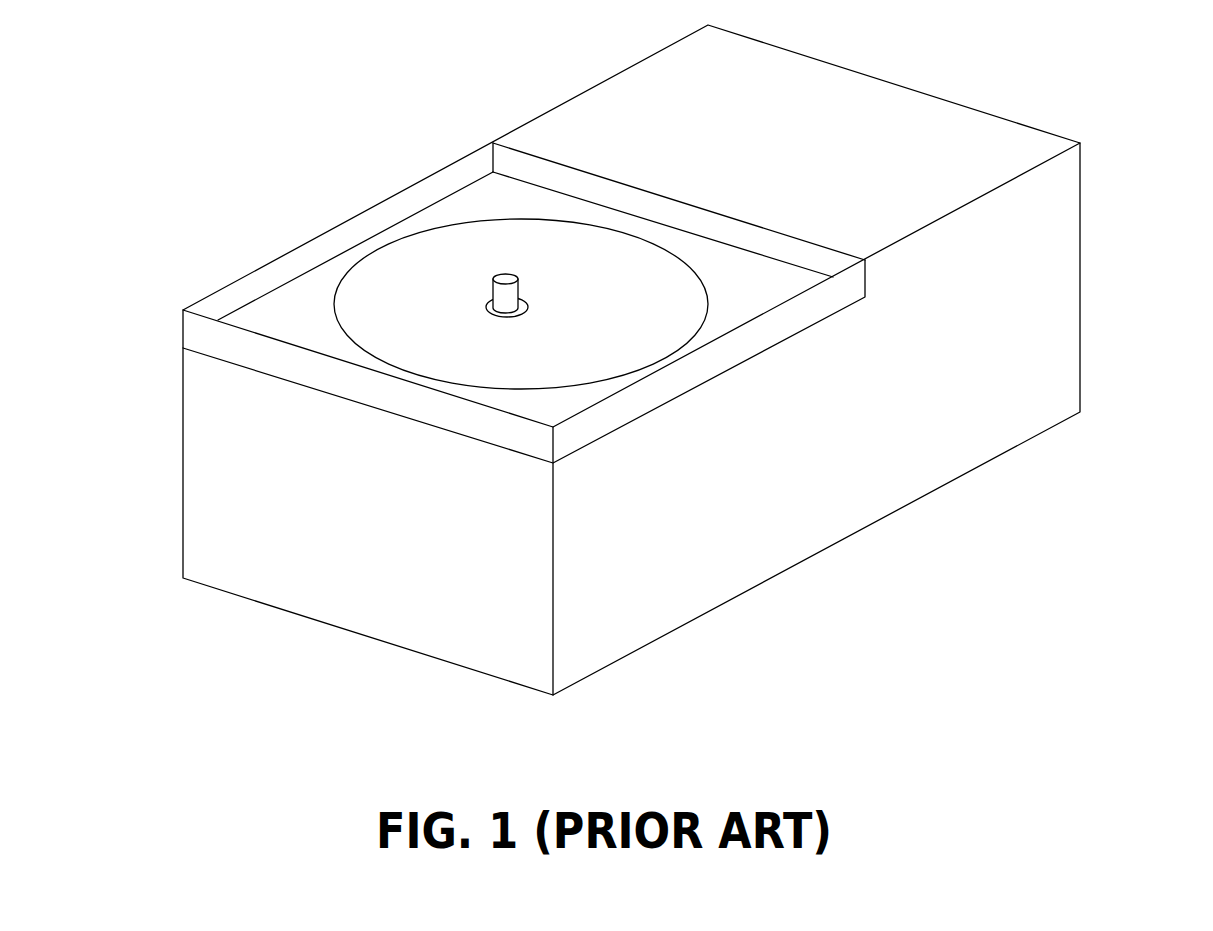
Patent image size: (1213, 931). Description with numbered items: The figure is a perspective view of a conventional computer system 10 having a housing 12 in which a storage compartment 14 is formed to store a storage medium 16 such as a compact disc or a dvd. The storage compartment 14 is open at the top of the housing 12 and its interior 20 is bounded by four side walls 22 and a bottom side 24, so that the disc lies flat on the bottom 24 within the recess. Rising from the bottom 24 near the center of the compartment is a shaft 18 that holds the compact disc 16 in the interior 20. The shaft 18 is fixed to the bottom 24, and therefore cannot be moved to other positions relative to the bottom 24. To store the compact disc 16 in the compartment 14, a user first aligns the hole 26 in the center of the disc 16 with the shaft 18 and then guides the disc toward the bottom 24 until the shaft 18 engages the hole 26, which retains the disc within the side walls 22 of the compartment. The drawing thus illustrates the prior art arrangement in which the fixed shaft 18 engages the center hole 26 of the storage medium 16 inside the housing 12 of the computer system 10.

The computer system 10 is at (692, 360).
The housing 12 is at (1081, 273).
The storage compartment 14 is at (552, 122).
The storage medium 16 is at (423, 230).
The shaft 18 is at (504, 276).
The interior 20 is at (293, 290).
The side walls 22 is at (332, 227).
The bottom side 24 is at (663, 234).
The hole 26 is at (510, 318).